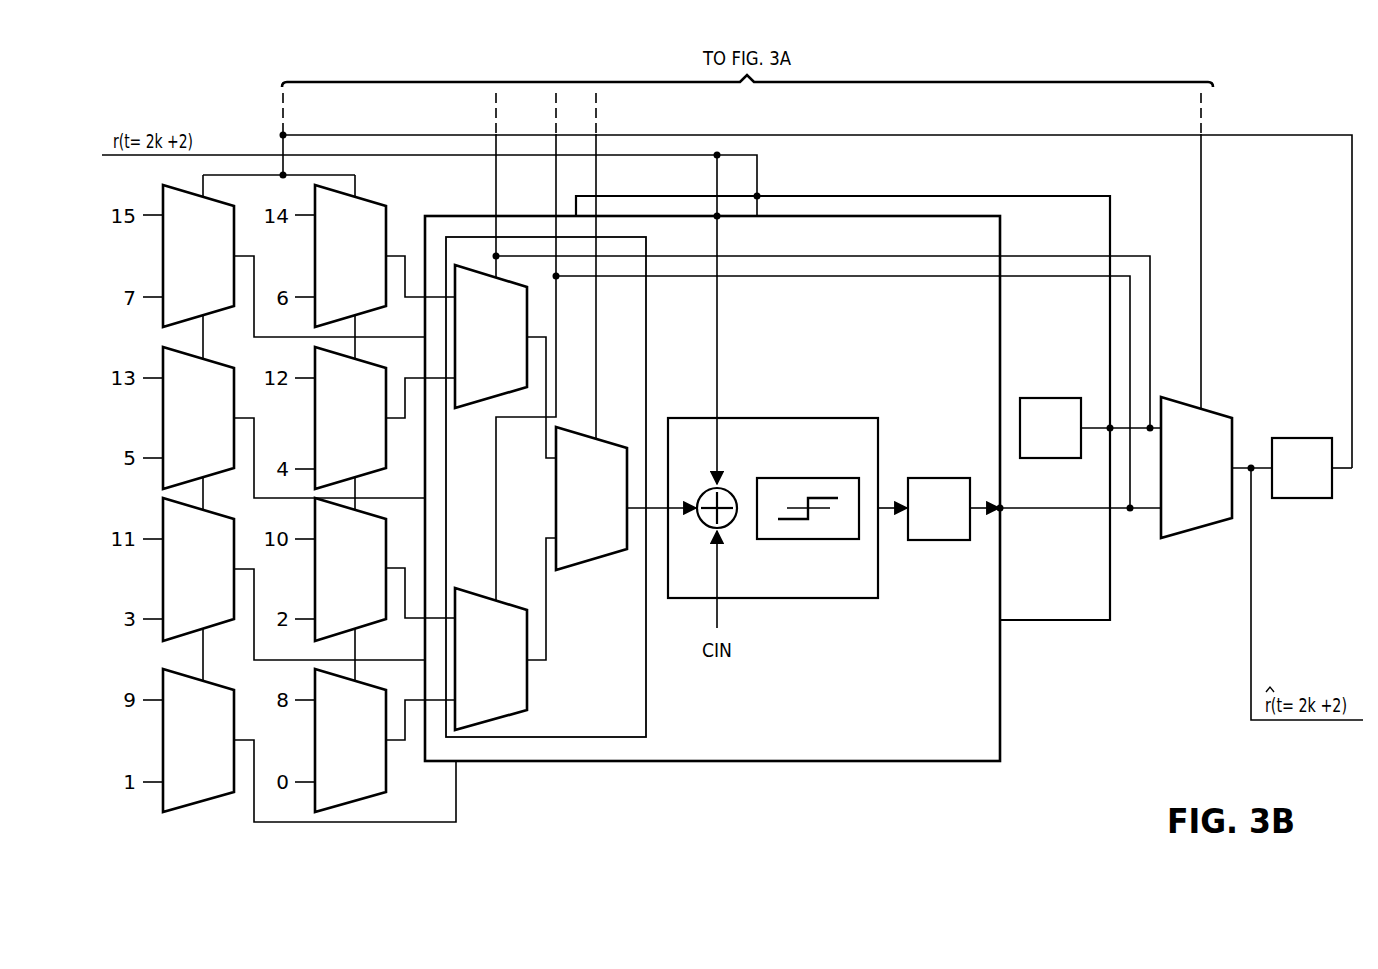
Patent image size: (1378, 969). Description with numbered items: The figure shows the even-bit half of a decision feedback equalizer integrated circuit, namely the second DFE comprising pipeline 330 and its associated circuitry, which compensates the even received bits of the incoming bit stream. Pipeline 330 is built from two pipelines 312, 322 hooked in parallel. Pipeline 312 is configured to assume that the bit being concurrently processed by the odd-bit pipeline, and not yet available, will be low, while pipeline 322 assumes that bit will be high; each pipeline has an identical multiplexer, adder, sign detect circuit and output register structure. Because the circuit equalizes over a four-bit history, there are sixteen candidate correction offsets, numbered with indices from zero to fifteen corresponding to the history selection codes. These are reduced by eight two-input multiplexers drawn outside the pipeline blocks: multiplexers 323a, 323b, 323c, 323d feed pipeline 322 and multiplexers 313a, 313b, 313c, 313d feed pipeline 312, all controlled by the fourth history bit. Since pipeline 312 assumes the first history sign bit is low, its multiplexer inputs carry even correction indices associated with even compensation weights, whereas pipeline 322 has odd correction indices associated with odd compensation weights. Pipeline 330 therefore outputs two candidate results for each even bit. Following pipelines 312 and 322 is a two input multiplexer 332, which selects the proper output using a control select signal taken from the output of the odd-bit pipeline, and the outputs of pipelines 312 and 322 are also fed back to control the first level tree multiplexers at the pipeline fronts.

The pipeline 312 is at (889, 765).
The multiplexer 313a is at (377, 271).
The multiplexer 313b is at (377, 432).
The multiplexer 313c is at (377, 582).
The multiplexer 313d is at (377, 754).
The pipeline 322 is at (1052, 625).
The multiplexer 323a is at (225, 271).
The multiplexer 323b is at (225, 432).
The multiplexer 323c is at (225, 582).
The multiplexer 323d is at (225, 754).
The pipeline 330 is at (1302, 499).
The two input multiplexer 332 is at (1176, 482).